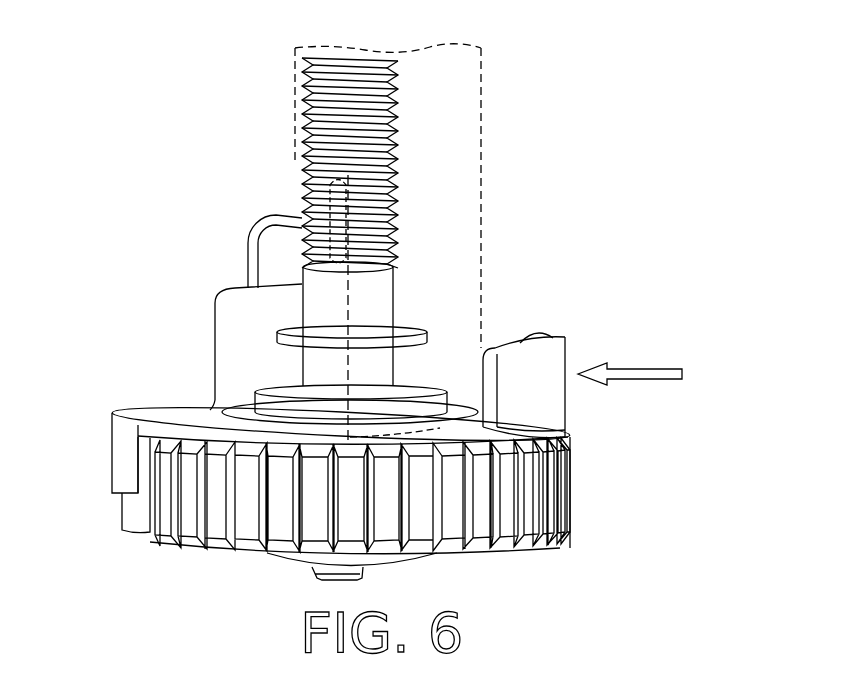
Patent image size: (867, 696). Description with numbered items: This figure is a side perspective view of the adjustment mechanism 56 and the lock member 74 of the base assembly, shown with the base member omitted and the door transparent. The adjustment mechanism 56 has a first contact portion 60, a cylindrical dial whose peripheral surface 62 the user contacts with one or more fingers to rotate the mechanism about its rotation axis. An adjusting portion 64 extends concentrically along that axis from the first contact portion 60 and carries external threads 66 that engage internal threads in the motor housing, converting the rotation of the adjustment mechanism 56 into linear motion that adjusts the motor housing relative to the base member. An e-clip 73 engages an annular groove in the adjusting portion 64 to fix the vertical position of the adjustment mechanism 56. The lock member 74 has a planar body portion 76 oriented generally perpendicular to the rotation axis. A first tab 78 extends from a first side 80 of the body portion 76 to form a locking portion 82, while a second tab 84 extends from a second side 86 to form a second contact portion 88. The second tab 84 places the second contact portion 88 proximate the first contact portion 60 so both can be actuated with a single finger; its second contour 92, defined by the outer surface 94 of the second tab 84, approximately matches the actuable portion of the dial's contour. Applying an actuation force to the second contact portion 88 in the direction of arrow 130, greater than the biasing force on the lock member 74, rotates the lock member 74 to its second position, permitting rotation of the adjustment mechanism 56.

The adjustment mechanism 56 is at (559, 556).
The first contact portion 60 is at (173, 556).
The peripheral surface 62 is at (572, 508).
The adjusting portion 64 is at (297, 208).
The external threads 66 is at (305, 184).
The e-clip 73 is at (285, 338).
The lock member 74 is at (515, 300).
The body portion 76 is at (206, 408).
The first tab 78 is at (110, 453).
The first side 80 is at (213, 440).
The locking portion 82 is at (108, 428).
The second tab 84 is at (568, 358).
The second side 86 is at (180, 410).
The second contact portion 88 is at (570, 407).
The second contour 92 is at (565, 335).
The outer surface 94 is at (565, 422).
The arrow 130 is at (655, 373).